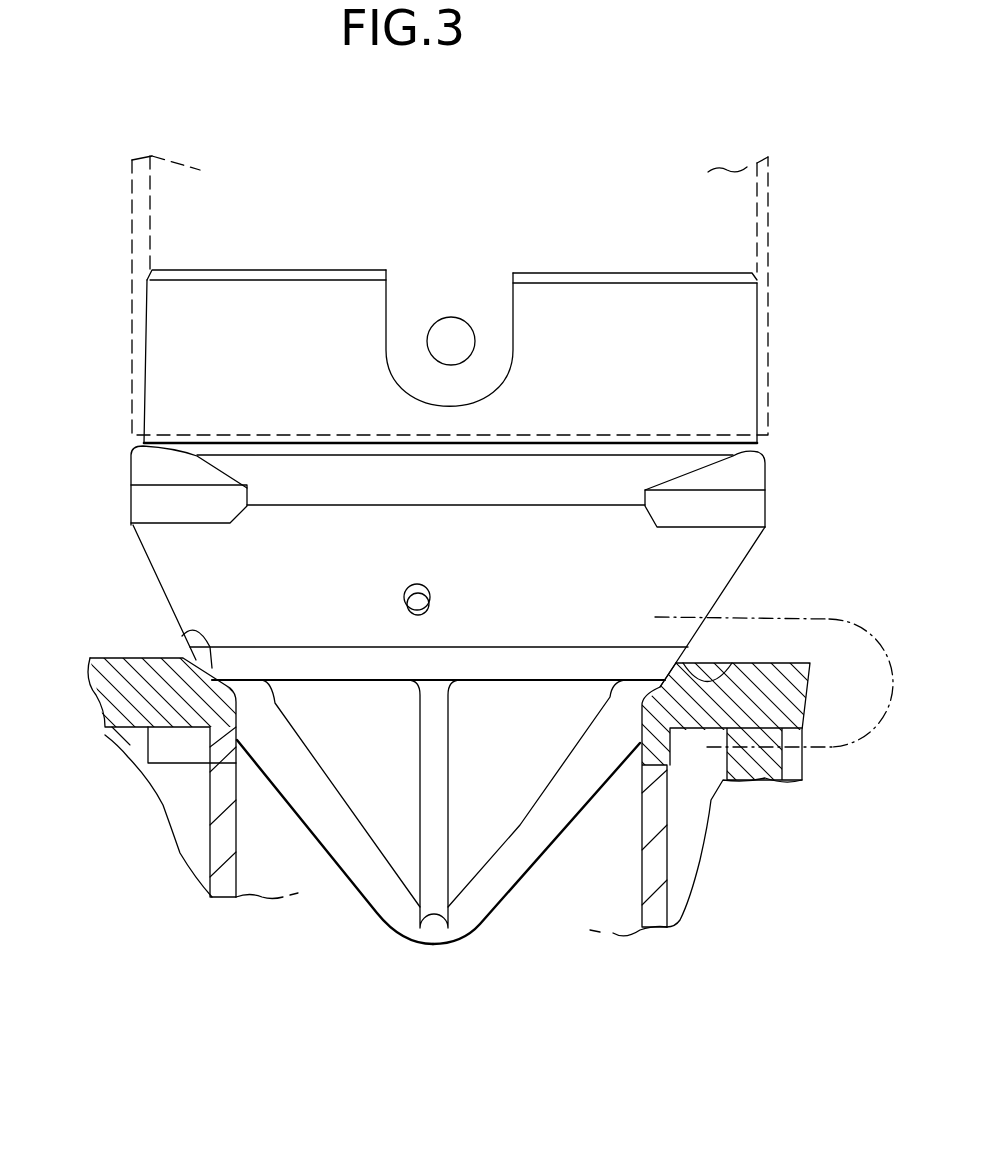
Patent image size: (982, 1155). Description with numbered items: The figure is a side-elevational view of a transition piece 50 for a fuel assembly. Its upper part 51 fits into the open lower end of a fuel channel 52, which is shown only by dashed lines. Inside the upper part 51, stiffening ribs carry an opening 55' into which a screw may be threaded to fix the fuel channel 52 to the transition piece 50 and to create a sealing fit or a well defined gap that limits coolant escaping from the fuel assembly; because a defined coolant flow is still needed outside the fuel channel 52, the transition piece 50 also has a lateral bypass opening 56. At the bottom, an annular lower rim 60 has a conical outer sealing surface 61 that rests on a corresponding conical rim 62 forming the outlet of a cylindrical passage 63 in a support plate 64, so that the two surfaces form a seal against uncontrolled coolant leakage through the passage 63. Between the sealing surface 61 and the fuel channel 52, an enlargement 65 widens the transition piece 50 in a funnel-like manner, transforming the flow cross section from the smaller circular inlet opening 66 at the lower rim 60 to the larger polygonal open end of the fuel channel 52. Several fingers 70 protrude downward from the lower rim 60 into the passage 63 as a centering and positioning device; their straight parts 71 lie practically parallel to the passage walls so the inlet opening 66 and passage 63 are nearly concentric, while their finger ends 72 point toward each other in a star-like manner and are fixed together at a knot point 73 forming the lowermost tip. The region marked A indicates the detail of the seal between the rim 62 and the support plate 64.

The transition piece 50 is at (103, 517).
The upper part 51 is at (137, 335).
The fuel channel 52 is at (157, 233).
The opening 55' is at (451, 292).
The lateral bypass opening 56 is at (404, 603).
The annular lower rim 60 is at (562, 678).
The outer sealing surface 61 is at (729, 670).
The conical rim 62 is at (182, 628).
The cylindrical passage 63 is at (620, 810).
The support plate 64 is at (703, 790).
The enlargement 65 is at (163, 562).
The inlet opening 66 is at (348, 683).
The fingers 70 is at (323, 820).
The straight parts 71 is at (250, 720).
The finger ends 72 is at (522, 858).
The knot point 73 is at (437, 942).
The detail region A is at (774, 668).